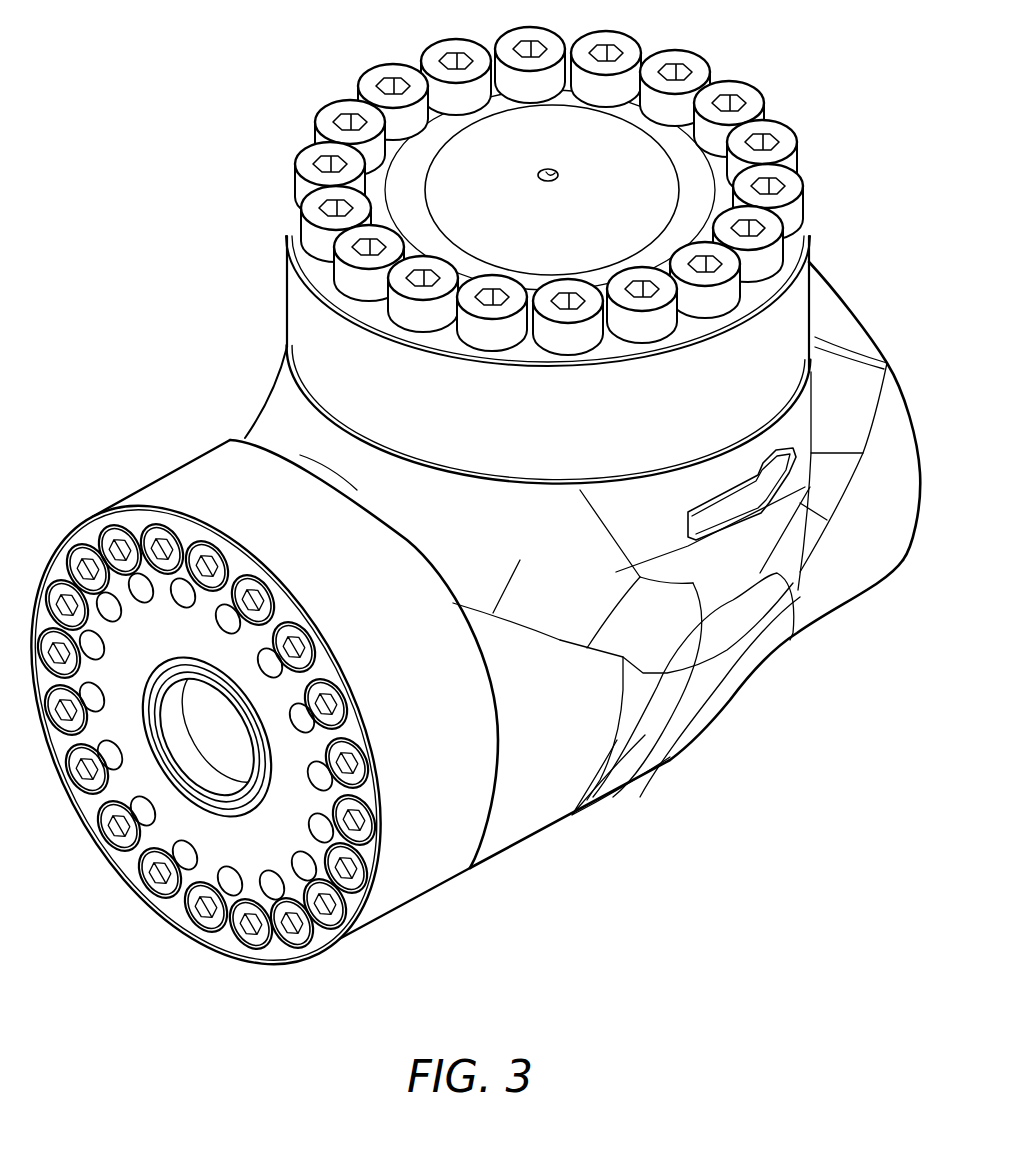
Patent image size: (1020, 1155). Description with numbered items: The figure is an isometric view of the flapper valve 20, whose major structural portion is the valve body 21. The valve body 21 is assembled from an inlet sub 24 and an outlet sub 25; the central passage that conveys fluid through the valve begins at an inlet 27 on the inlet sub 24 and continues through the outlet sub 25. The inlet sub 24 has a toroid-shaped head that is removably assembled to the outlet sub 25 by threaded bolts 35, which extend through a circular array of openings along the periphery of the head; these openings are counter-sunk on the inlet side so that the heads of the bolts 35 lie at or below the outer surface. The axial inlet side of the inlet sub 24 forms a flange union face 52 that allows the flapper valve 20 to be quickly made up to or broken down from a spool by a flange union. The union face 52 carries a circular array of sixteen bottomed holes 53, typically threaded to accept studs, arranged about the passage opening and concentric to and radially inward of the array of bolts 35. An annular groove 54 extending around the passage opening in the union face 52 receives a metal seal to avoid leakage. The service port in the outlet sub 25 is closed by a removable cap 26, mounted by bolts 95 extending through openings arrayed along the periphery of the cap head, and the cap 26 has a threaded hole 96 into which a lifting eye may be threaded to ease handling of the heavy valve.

The flapper valve 20 is at (208, 171).
The valve body 21 is at (816, 606).
The inlet sub 24 is at (249, 731).
The outlet sub 25 is at (510, 817).
The cap 26 is at (565, 259).
The inlet 27 is at (167, 700).
The threaded bolts 35 is at (243, 592).
The flange union face 52 is at (133, 787).
The holes 53 is at (280, 657).
The annular groove 54 is at (160, 678).
The bolts 95 is at (787, 140).
The threaded hole 96 is at (560, 174).